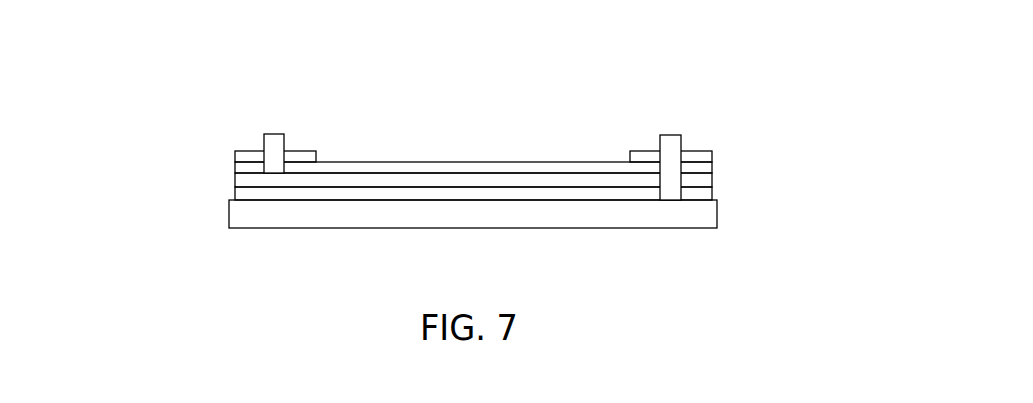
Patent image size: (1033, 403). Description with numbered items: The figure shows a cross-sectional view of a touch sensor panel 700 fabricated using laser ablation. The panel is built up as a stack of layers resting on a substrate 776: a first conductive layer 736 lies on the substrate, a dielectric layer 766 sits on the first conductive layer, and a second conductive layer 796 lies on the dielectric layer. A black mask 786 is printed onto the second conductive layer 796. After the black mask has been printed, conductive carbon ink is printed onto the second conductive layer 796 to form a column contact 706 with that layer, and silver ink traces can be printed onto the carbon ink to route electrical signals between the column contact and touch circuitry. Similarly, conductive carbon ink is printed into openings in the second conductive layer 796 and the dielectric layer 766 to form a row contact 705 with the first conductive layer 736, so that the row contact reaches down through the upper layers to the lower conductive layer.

The touch sensor panel 700 is at (803, 86).
The row contact 705 is at (672, 135).
The column contact 706 is at (276, 132).
The first conductive layer 736 is at (239, 197).
The dielectric layer 766 is at (243, 181).
The substrate 776 is at (637, 220).
The black mask 786 is at (703, 157).
The second conductive layer 796 is at (703, 168).